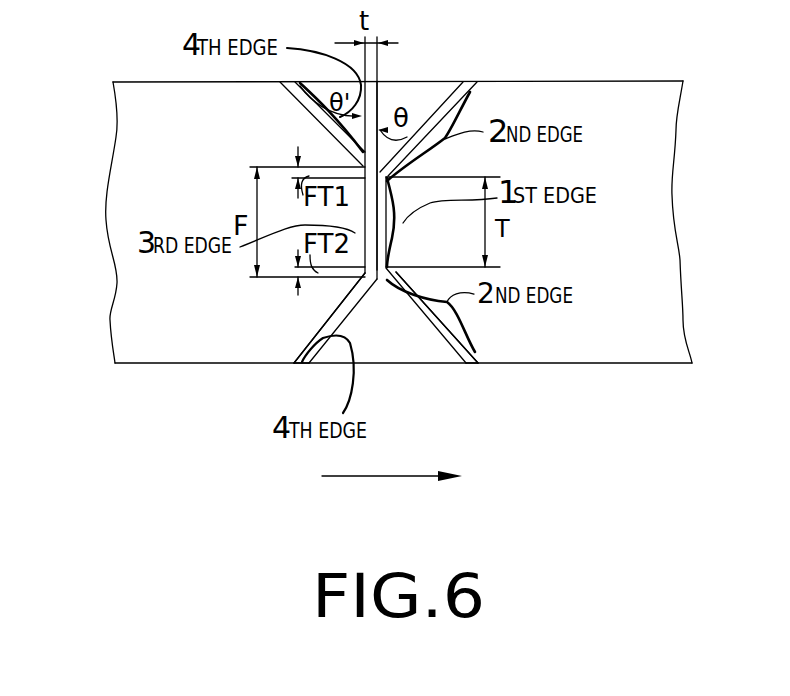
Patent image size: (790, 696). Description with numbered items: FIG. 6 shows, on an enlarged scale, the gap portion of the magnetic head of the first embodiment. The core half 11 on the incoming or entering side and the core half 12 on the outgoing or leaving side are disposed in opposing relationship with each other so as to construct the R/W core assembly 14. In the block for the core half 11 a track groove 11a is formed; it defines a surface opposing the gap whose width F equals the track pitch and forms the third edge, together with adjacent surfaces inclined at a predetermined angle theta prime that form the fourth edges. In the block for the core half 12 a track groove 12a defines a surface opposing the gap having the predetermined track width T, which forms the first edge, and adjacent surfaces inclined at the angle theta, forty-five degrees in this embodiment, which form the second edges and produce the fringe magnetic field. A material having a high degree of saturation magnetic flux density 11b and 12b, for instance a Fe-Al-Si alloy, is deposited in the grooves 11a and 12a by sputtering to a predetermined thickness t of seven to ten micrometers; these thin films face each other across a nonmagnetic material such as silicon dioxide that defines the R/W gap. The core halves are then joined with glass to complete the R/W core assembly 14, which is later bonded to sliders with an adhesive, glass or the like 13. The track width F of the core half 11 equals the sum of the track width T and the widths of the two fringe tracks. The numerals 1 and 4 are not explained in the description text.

The cutting blade 1 is at (377, 236).
The feed direction arrow 4 is at (372, 480).
The core half on the incoming or entering side 11 is at (122, 237).
The track groove 11a is at (322, 315).
The material having a high degree of saturation magnetic flux density 11b is at (303, 363).
The core half on the outgoing or leaving side 12 is at (652, 197).
The track groove 12a is at (455, 338).
The material having a high degree of saturation magnetic flux density 12b is at (477, 366).
The adhesive, glass or the like 13 is at (378, 107).
The R/W core assembly 14 is at (663, 347).